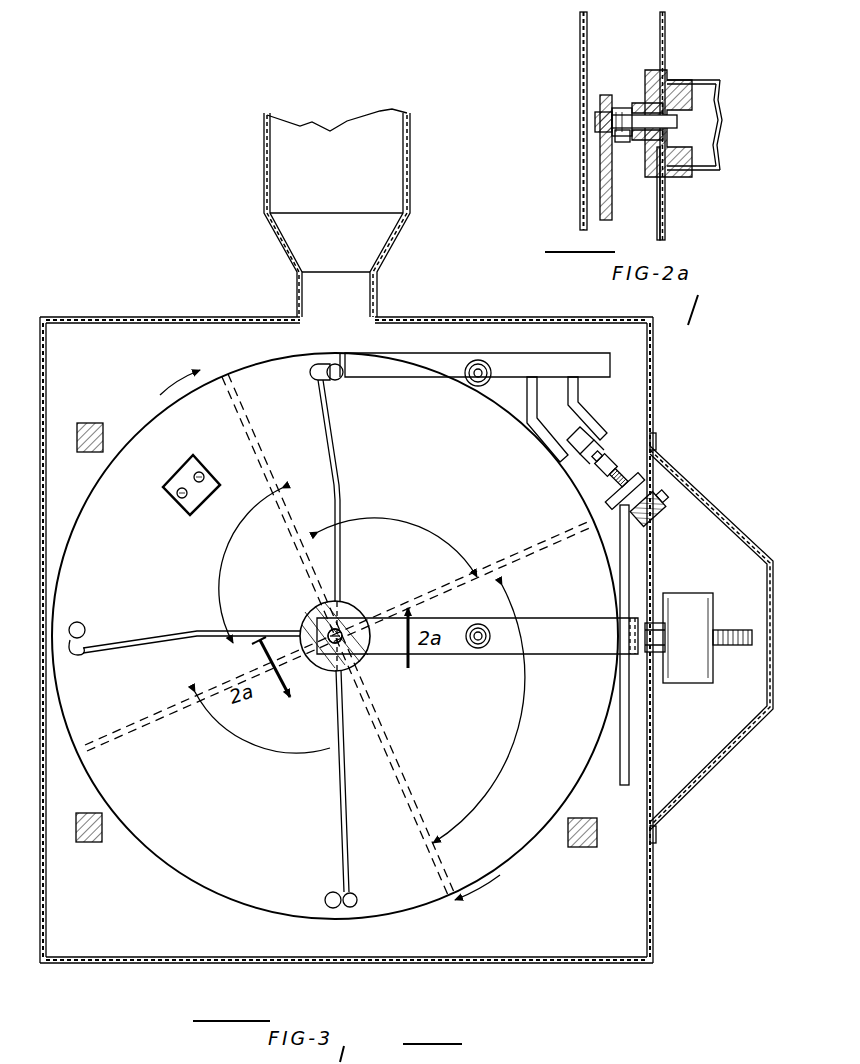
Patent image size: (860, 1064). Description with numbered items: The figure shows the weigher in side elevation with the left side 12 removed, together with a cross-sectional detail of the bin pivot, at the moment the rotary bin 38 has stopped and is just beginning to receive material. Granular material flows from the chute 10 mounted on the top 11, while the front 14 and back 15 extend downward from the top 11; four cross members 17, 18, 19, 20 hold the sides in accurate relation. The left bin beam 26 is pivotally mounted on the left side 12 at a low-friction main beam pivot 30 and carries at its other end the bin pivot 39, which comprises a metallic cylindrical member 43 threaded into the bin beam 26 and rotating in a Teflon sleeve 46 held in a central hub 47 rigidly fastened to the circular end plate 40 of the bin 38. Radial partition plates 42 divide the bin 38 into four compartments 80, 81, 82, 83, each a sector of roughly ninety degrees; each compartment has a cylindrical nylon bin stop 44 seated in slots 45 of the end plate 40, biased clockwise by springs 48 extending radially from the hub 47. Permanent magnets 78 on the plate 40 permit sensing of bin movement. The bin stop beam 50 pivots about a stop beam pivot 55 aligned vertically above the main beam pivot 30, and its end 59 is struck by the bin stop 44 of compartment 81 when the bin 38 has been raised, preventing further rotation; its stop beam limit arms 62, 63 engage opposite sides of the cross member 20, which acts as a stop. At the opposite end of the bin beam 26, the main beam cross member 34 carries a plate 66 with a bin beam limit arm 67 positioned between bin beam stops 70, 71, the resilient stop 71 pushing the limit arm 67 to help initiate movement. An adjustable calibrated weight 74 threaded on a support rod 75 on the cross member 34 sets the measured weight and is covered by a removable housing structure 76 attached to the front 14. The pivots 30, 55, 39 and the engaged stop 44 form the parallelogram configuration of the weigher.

In FIG. 3, the chute 10 is at (264, 150).
In FIG. 3, the top 11 is at (176, 317).
In FIG. 2A, the left side 12 is at (580, 45).
In FIG. 3, the front 14 is at (655, 926).
In FIG. 3, the back 15 is at (40, 748).
In FIG. 3, the cross member 17 is at (93, 423).
In FIG. 3, the cross member 18 is at (84, 842).
In FIG. 3, the cross member 19 is at (582, 847).
In FIG. 3, the cross member 20 is at (582, 462).
In FIG. 3, the left bin beam 26 is at (546, 618).
In FIG. 2A, the left bin beam 26 is at (600, 172).
In FIG. 3, the main beam pivot 30 is at (478, 652).
In FIG. 3, the main beam cross member 34 is at (651, 655).
In FIG. 3, the rotary bin 38 is at (196, 872).
In FIG. 3, the bin pivot 39 is at (318, 606).
In FIG. 2A, the bin pivot 39 is at (595, 122).
In FIG. 2A, the bin end plate 40 is at (665, 213).
In FIG. 3, the partition plate 42 is at (238, 408).
In FIG. 2A, the cylindrical member 43 is at (702, 122).
In FIG. 3, the bin stop 44 is at (338, 381).
In FIG. 3, the slot 45 is at (312, 372).
In FIG. 2A, the sleeve 46 is at (638, 104).
In FIG. 3, the central hub 47 is at (352, 664).
In FIG. 2A, the central hub 47 is at (648, 70).
In FIG. 3, the spring 48 is at (340, 468).
In FIG. 2A, the spring 48 is at (657, 200).
In FIG. 3, the left bin stop beam 50 is at (436, 360).
In FIG. 3, the stop beam pivot 55 is at (468, 387).
In FIG. 3, the stop beam end 59 is at (346, 353).
In FIG. 3, the stop beam limit arm 62 is at (540, 443).
In FIG. 3, the stop beam limit arm 63 is at (590, 422).
In FIG. 3, the plate 66 is at (620, 716).
In FIG. 3, the bin beam limit arm 67 is at (610, 500).
In FIG. 3, the bin beam stop 70 is at (611, 462).
In FIG. 3, the resilient bin beam stop 71 is at (646, 494).
In FIG. 3, the adjustable weight 74 is at (698, 684).
In FIG. 3, the support rod 75 is at (734, 647).
In FIG. 3, the housing structure 76 is at (740, 748).
In FIG. 3, the permanent magnet 78 is at (175, 490).
In FIG. 3, the compartment 80 is at (481, 714).
In FIG. 3, the compartment 81 is at (397, 547).
In FIG. 3, the compartment 82 is at (250, 565).
In FIG. 3, the compartment 83 is at (262, 722).